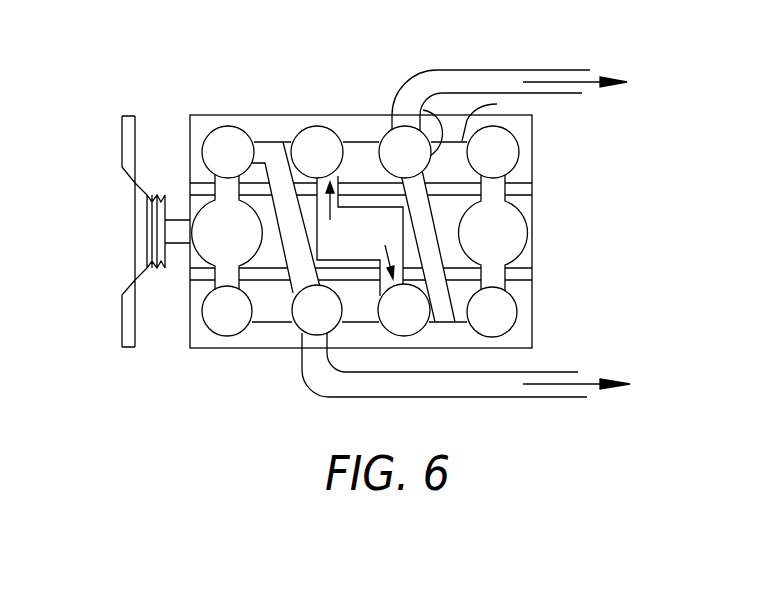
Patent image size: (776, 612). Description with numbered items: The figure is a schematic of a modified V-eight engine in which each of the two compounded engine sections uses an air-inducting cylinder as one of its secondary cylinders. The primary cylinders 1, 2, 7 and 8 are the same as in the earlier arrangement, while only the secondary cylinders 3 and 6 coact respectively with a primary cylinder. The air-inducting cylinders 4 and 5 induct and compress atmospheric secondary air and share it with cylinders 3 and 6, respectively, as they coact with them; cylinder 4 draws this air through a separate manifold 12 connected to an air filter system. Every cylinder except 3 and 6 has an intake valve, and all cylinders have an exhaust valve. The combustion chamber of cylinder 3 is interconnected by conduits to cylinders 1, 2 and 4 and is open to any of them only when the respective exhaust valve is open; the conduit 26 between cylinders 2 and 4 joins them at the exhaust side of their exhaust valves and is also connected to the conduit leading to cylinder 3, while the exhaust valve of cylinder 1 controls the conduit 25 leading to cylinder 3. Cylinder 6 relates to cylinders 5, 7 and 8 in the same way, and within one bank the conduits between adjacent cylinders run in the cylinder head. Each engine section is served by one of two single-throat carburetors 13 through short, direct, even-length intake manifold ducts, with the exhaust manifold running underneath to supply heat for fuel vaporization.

The separate manifold 12 is at (339, 264).
The single-throat carburetor 13 is at (198, 252).
The conduit 25 is at (430, 110).
The conduit 26 is at (218, 366).
The primary cylinder 1 is at (227, 311).
The primary cylinder 2 is at (228, 152).
The secondary cylinder 3 is at (317, 310).
The air-inducting cylinder 4 is at (317, 152).
The air-inducting cylinder 5 is at (404, 310).
The secondary cylinder 6 is at (405, 152).
The primary cylinder 7 is at (492, 312).
The primary cylinder 8 is at (493, 152).